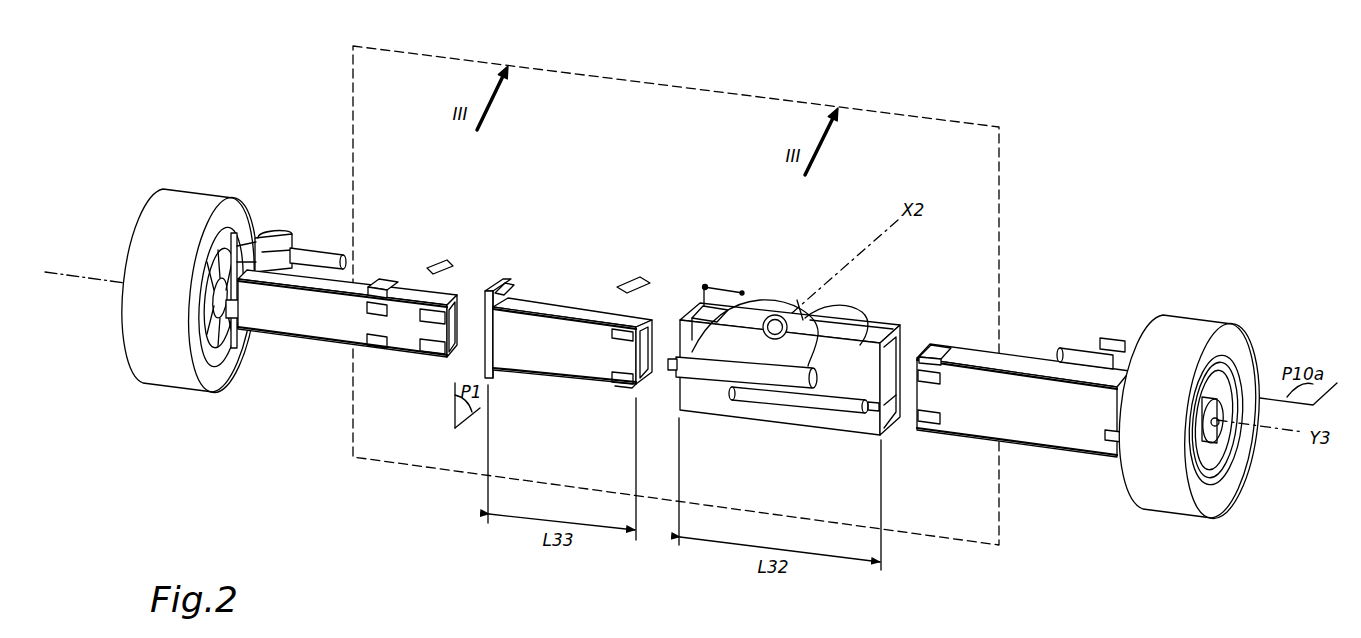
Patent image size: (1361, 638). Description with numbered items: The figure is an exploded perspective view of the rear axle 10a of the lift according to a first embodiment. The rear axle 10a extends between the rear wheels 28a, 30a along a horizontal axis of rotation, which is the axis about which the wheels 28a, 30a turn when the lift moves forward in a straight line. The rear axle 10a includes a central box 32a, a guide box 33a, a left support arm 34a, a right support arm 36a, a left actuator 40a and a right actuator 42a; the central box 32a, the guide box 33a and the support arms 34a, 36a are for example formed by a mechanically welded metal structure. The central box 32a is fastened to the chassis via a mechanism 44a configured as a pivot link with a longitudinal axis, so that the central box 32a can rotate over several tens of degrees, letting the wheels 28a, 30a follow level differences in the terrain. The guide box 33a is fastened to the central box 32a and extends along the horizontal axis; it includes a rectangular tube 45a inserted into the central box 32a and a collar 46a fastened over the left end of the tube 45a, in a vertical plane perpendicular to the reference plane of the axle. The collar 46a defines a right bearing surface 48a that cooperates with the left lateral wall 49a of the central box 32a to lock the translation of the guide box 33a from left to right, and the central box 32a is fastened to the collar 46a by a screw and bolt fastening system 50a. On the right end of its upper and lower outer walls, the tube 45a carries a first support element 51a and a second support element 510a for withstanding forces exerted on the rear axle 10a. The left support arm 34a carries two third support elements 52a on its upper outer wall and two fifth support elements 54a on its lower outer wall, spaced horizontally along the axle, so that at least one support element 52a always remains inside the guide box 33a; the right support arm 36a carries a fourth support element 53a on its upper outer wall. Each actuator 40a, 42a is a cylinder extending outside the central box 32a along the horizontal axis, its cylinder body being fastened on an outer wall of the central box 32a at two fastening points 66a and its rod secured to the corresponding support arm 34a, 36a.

The rear axle 10a is at (259, 108).
The rear wheel 28a is at (170, 232).
The rear wheel 30a is at (1180, 345).
The central box 32a is at (775, 341).
The guide box 33a is at (555, 300).
The left support arm 34a is at (367, 270).
The right support arm 36a is at (1014, 359).
The left actuator 40a is at (707, 390).
The right actuator 42a is at (814, 420).
The mechanism 44a is at (797, 305).
The rectangular tube 45a is at (592, 313).
The collar 46a is at (495, 280).
The right bearing surface 48a is at (512, 298).
The left lateral wall 49a is at (683, 317).
The screw and bolt fastening system 50a is at (717, 276).
The first support element 51a is at (633, 277).
The third support element 52a is at (383, 280).
The fourth support element 53a is at (940, 333).
The fifth support element 54a is at (373, 350).
The fastening point 66a is at (698, 338).
The second support element 510a is at (628, 388).